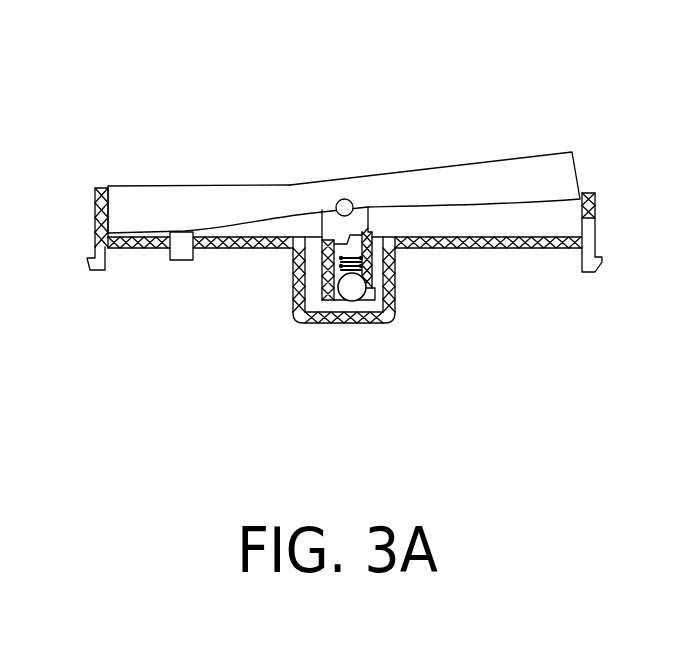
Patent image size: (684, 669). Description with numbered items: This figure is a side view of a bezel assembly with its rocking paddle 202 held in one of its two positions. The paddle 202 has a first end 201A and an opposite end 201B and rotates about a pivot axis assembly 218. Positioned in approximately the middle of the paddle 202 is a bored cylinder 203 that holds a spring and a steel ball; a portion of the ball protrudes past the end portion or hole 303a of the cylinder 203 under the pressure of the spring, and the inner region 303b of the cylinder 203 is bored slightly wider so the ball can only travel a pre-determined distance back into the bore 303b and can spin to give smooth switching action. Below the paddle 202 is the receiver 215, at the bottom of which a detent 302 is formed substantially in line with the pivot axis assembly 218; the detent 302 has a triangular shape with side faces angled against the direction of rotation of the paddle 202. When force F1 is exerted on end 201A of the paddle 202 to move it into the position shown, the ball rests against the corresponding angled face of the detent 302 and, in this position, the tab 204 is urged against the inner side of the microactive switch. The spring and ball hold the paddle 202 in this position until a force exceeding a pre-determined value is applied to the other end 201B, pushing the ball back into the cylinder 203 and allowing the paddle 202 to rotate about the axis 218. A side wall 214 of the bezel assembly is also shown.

The force F1 is at (151, 152).
The end of paddle 201A is at (155, 197).
The other end of paddle 201B is at (542, 167).
The paddle 202 is at (404, 173).
The bored cylinder 203 is at (364, 269).
The tab 204 is at (180, 262).
The housing side wall 214 is at (597, 193).
The receiver 215 is at (392, 296).
The pivot axis assembly 218 is at (345, 199).
The detent 302 is at (350, 300).
The hole of cylinder 303a is at (366, 308).
The bore region of cylinder 303b is at (338, 287).